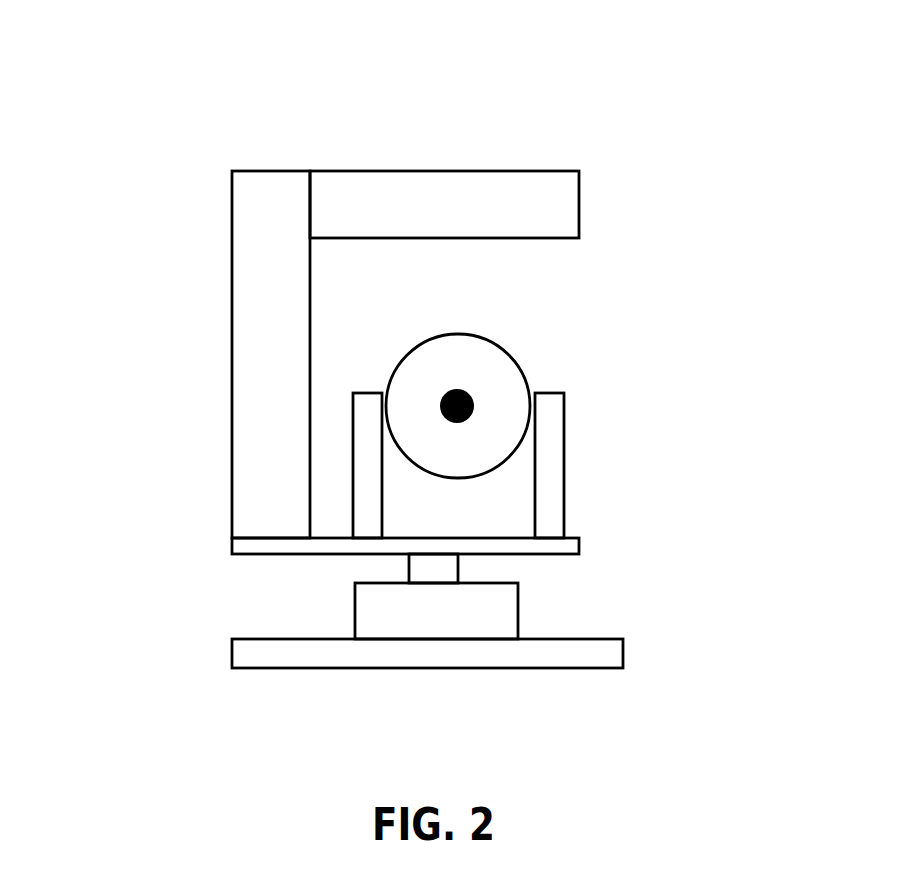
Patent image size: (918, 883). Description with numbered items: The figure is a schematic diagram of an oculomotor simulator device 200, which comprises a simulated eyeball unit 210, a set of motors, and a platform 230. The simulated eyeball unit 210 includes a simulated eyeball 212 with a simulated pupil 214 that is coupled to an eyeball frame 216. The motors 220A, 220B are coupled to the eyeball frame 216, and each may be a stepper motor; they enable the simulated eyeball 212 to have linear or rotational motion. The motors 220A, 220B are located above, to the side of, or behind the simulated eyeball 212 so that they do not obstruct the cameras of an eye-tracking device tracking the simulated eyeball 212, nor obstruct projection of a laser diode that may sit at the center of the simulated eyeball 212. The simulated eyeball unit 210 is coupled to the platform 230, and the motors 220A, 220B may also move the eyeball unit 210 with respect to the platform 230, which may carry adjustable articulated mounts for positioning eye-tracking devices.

The oculomotor simulator device 200 is at (593, 37).
The simulated eyeball unit 210 is at (346, 532).
The simulated eyeball 212 is at (458, 335).
The simulated pupil 214 is at (468, 388).
The eyeball frame 216 is at (565, 463).
The motor 220A is at (532, 203).
The motor 220B is at (518, 613).
The platform 230 is at (623, 655).